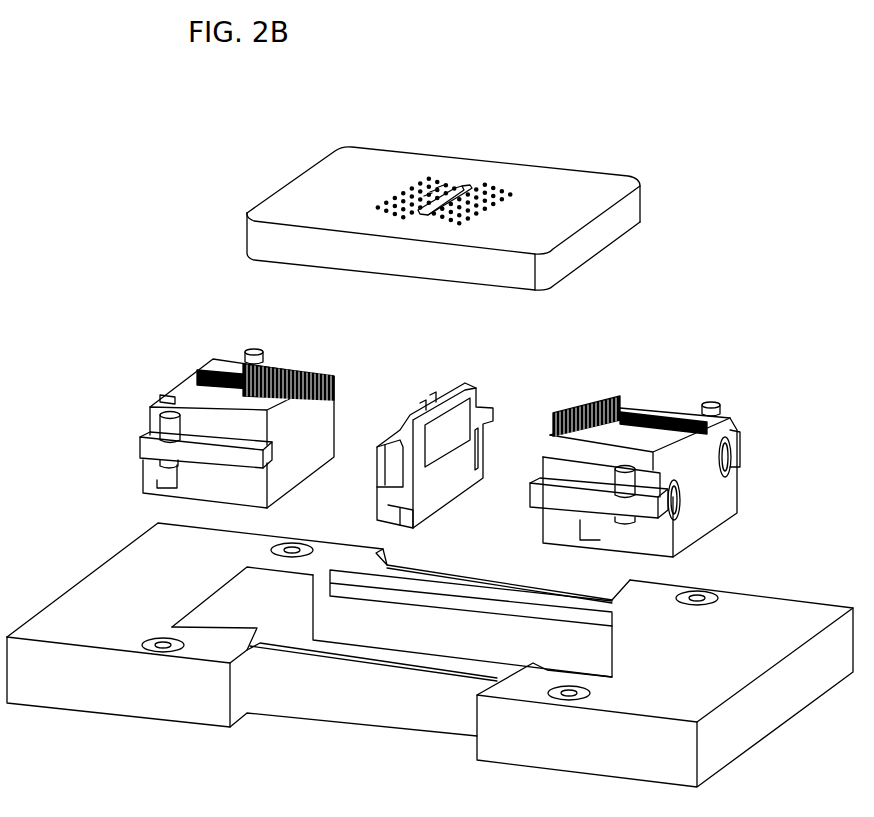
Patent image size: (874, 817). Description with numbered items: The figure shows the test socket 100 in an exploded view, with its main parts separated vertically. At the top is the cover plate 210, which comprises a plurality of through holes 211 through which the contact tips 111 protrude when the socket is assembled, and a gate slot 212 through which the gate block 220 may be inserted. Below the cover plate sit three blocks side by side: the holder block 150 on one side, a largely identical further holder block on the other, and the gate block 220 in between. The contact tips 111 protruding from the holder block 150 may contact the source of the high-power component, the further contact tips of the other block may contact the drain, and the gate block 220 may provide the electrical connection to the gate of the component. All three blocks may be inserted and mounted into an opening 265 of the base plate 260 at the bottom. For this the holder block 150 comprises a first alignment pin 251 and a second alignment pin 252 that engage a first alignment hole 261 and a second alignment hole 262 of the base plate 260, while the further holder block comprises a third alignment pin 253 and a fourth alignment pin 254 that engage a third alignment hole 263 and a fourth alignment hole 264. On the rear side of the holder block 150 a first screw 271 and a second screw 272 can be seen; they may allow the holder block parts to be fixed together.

The test socket 100 is at (172, 222).
The cover plate 210 is at (289, 198).
The through holes 211 is at (478, 190).
The gate slot 212 is at (465, 186).
The holder block 150 is at (745, 408).
The contact tips 111 is at (586, 398).
The third alignment pin 253 is at (252, 350).
The fourth alignment pin 254 is at (160, 425).
The second alignment pin 252 is at (713, 400).
The first alignment pin 251 is at (622, 484).
The first screw 271 is at (690, 503).
The second screw 272 is at (738, 462).
The gate block 220 is at (475, 372).
The base plate 260 is at (70, 605).
The first alignment hole 261 is at (572, 688).
The second alignment hole 262 is at (700, 594).
The third alignment hole 263 is at (296, 545).
The fourth alignment hole 264 is at (162, 640).
The recess 265 is at (272, 612).